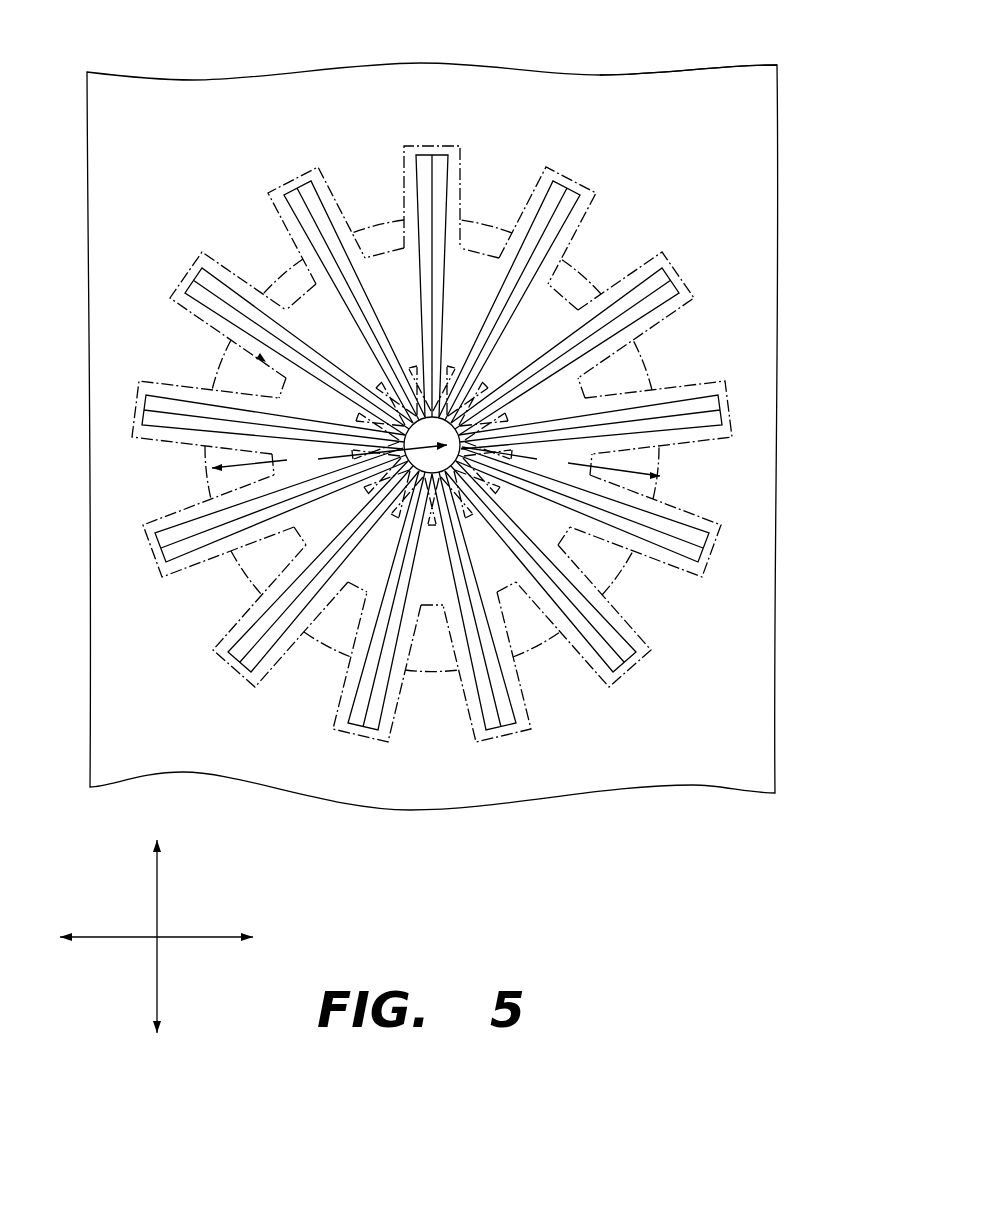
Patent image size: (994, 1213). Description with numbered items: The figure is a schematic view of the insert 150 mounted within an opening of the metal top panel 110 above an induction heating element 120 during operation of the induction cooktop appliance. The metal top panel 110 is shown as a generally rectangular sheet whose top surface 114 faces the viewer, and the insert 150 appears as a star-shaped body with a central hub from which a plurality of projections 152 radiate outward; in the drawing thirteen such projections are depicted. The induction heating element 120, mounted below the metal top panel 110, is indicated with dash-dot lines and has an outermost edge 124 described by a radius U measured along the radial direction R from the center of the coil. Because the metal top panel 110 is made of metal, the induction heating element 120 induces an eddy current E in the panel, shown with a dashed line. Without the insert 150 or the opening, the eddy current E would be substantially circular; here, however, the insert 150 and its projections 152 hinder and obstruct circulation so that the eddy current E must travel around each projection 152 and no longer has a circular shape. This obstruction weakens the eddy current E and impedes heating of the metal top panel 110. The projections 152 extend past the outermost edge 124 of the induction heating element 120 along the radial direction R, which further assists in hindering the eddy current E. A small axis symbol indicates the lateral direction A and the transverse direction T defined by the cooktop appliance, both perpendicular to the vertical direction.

The metal top panel 110 is at (470, 80).
The top surface 114 is at (638, 100).
The induction heating element 120 is at (438, 457).
The outermost edge 124 is at (660, 477).
The insert 150 is at (432, 425).
The plurality of projections 152 is at (548, 207).
The eddy current E is at (196, 262).
The radial direction R is at (329, 459).
The radius U is at (561, 462).
The transverse direction T is at (197, 935).
The lateral direction A is at (157, 970).